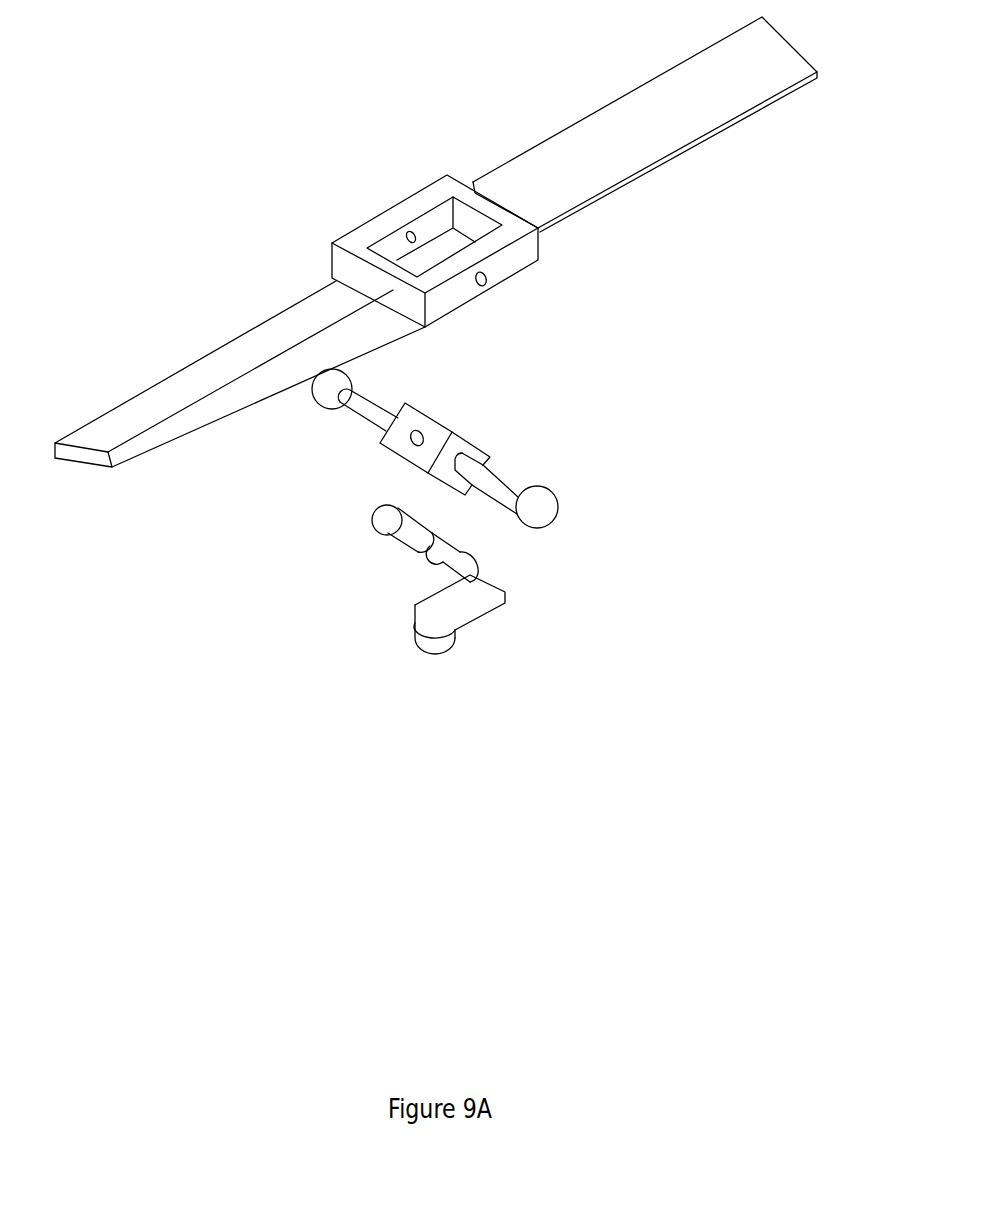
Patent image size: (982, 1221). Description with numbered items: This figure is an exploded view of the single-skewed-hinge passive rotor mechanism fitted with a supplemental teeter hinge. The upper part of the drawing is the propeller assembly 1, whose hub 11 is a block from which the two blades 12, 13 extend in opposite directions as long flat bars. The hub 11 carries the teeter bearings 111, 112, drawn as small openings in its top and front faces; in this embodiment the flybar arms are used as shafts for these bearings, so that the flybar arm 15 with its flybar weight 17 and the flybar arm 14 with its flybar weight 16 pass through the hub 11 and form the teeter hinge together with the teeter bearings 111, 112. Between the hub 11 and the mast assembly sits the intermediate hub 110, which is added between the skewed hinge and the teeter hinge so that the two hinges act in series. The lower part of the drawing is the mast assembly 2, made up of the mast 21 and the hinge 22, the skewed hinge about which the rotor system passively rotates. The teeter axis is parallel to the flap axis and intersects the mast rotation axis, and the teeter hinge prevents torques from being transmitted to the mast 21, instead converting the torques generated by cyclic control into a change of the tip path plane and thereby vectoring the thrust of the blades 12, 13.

The propeller assembly 1 is at (436, 242).
The hub 11 is at (330, 260).
The blade 12 is at (228, 342).
The blade 13 is at (600, 205).
The teeter bearing 111 is at (403, 236).
The teeter bearing 112 is at (489, 282).
The intermediate hub 110 is at (475, 440).
The flybar arm 14 is at (505, 478).
The flybar arm 15 is at (377, 429).
The flybar weight 16 is at (559, 503).
The flybar weight 17 is at (316, 409).
The mast assembly 2 is at (560, 573).
The mast 21 is at (488, 613).
The hinge 22 is at (438, 540).